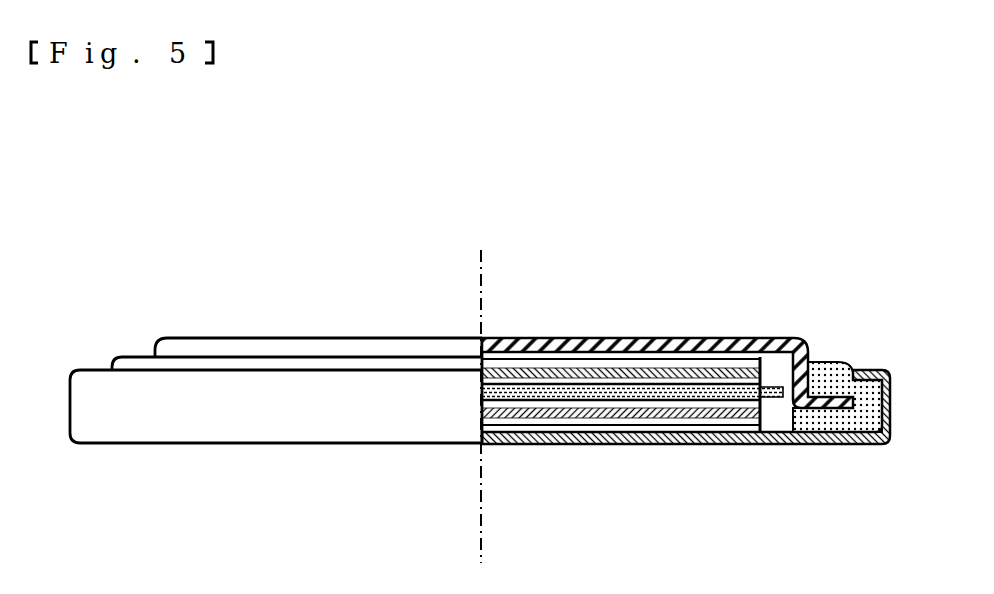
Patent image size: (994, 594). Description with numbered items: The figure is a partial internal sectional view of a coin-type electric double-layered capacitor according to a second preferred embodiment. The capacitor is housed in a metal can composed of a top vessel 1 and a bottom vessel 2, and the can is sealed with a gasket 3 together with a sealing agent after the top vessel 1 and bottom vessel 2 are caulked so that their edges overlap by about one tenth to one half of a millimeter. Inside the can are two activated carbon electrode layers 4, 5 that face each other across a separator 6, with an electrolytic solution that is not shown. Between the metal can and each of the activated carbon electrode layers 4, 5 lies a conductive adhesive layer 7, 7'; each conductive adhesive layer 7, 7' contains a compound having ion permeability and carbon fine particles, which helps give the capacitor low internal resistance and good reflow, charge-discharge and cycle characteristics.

The top vessel 1 is at (698, 340).
The bottom vessel 2 is at (730, 444).
The gasket 3 is at (856, 430).
The activated carbon electrode layer 4 is at (611, 378).
The activated carbon electrode layer 5 is at (624, 412).
The separator 6 is at (765, 388).
The conductive adhesive layer 7 is at (621, 305).
The conductive adhesive layer 7' is at (621, 483).